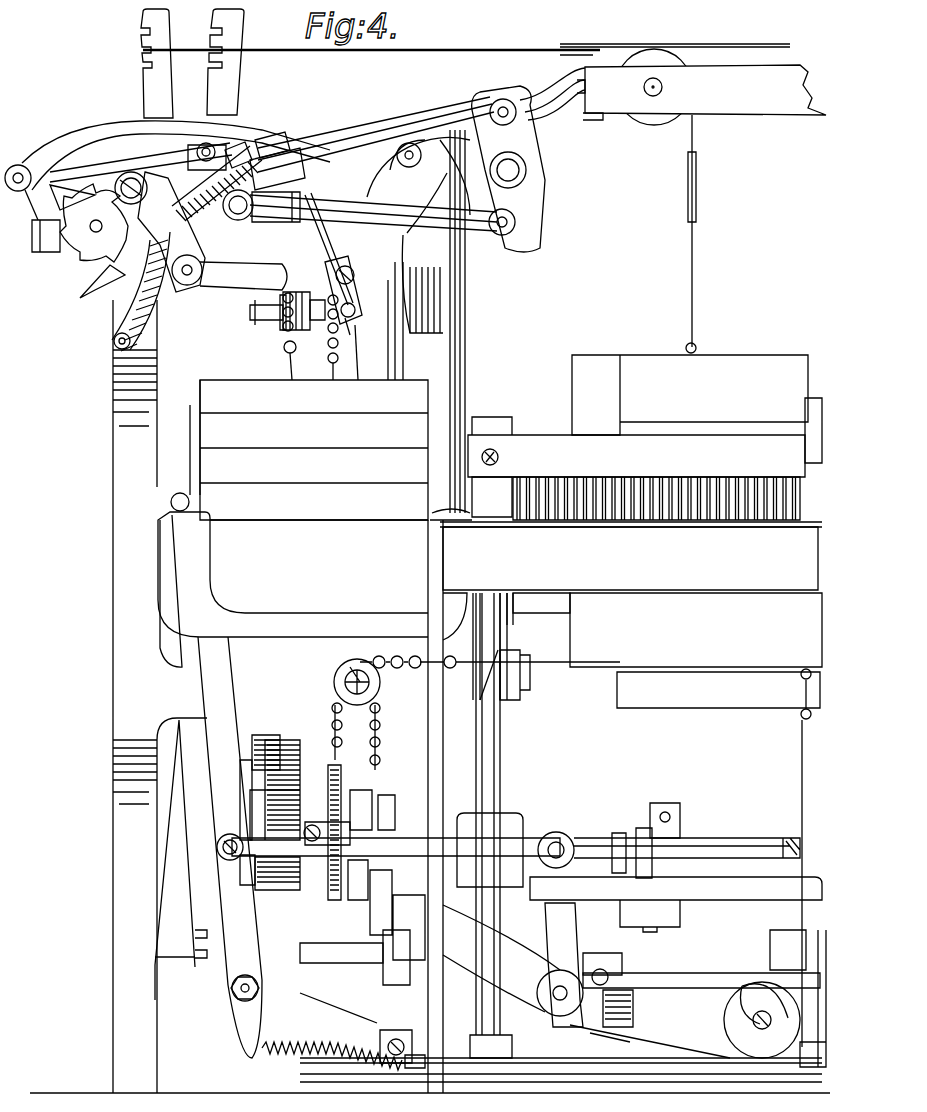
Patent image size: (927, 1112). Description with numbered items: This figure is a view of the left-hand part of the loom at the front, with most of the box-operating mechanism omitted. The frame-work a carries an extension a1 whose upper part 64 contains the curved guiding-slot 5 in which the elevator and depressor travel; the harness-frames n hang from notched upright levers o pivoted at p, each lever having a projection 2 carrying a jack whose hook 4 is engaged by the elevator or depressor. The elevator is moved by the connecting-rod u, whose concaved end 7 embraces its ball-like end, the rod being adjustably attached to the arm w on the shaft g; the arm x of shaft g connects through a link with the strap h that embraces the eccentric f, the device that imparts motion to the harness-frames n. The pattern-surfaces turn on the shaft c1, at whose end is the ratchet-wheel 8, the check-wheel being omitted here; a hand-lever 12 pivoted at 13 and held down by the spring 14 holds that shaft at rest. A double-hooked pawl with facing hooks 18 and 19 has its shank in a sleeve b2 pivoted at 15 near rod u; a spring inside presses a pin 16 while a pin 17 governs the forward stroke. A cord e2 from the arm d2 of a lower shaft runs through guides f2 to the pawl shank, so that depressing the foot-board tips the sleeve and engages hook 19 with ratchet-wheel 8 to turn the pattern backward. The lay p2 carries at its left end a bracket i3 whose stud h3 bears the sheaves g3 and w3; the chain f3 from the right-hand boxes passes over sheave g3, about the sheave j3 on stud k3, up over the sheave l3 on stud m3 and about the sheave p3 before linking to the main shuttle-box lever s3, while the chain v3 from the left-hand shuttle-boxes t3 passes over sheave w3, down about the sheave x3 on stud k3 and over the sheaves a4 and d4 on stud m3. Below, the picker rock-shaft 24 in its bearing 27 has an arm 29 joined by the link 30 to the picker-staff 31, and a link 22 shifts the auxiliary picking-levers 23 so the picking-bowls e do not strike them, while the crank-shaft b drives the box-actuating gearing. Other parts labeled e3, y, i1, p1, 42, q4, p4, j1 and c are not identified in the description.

The projection 2 is at (75, 134).
The upper part of frame-work 64 is at (141, 162).
The pivot 15 is at (204, 156).
The pin 16 is at (246, 148).
The sleeve b2 is at (238, 142).
The arm d2 is at (272, 135).
The pin 17 is at (277, 169).
The hook 18 is at (66, 197).
The ratchet-wheel 8 is at (50, 218).
The shaft c1 is at (88, 232).
The hook 4 is at (88, 248).
The hook 19 is at (102, 281).
The spring 14 is at (118, 312).
The hand-lever 12 is at (190, 224).
The pivot 13 is at (190, 285).
The curved guiding-slot 5 is at (230, 205).
The concaved end 7 is at (266, 207).
The link rod e3 is at (322, 236).
The connecting-rod u is at (376, 133).
The arm x is at (417, 149).
The bar y is at (373, 206).
The arm w is at (520, 126).
The shaft g is at (514, 172).
The extension of frame-work a1 is at (417, 258).
The rod i1 is at (403, 365).
The sheave p3 is at (296, 296).
The stud m3 is at (252, 310).
The sheave l3 is at (334, 640).
The chain f3 is at (283, 336).
The sheave a4 is at (312, 325).
The chain v3 is at (328, 337).
The sheave d4 is at (350, 325).
The guides f2 is at (360, 305).
The cord or wire e2 is at (365, 352).
The shuttle-boxes t3 is at (314, 450).
The pivot p is at (171, 501).
The sheave w3 is at (322, 562).
The picker-staff 31 is at (230, 847).
The harness-frames n is at (698, 384).
The comb bar p1 is at (685, 478).
The lay p2 is at (630, 588).
The bracket i3 is at (392, 652).
The sheave g3 is at (357, 660).
The stud h3 is at (348, 683).
The main shuttle-box lever s3 is at (532, 680).
The link 42 is at (482, 679).
The gear q4 is at (285, 768).
The gear p4 is at (272, 880).
The collar j1 is at (265, 880).
The link 30 is at (388, 847).
The strap h is at (342, 832).
The eccentric f is at (397, 877).
The sheave j3 is at (341, 983).
The stud k3 is at (332, 1046).
The sheave x3 is at (383, 1059).
The bearing c is at (525, 840).
The crank-shaft b is at (592, 845).
The picking-bowls e is at (646, 840).
The link 22 is at (676, 932).
The arm 29 is at (564, 965).
The bearing 27 is at (513, 960).
The picker rock-shaft 24 is at (558, 994).
The auxiliary picking-levers 23 is at (620, 968).
The frame-work a is at (430, 611).
The upright levers o is at (465, 504).